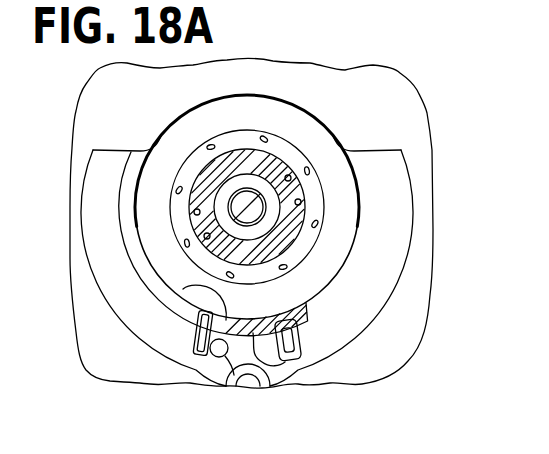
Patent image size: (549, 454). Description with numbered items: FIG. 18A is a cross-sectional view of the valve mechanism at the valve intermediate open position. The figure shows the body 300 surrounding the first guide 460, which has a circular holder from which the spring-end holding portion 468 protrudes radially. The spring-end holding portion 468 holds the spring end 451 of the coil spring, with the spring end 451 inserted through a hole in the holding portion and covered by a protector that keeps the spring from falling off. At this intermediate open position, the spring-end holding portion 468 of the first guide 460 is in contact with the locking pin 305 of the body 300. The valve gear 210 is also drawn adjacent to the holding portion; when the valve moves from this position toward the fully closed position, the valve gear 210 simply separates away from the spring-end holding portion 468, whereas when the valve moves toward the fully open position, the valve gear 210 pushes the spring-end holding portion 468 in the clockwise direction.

The body 300 is at (378, 108).
The first guide 460 is at (337, 174).
The spring-end holding portion 468 is at (183, 289).
The spring end 451 is at (195, 341).
The locking pin 305 is at (219, 348).
The valve gear 210 is at (275, 362).